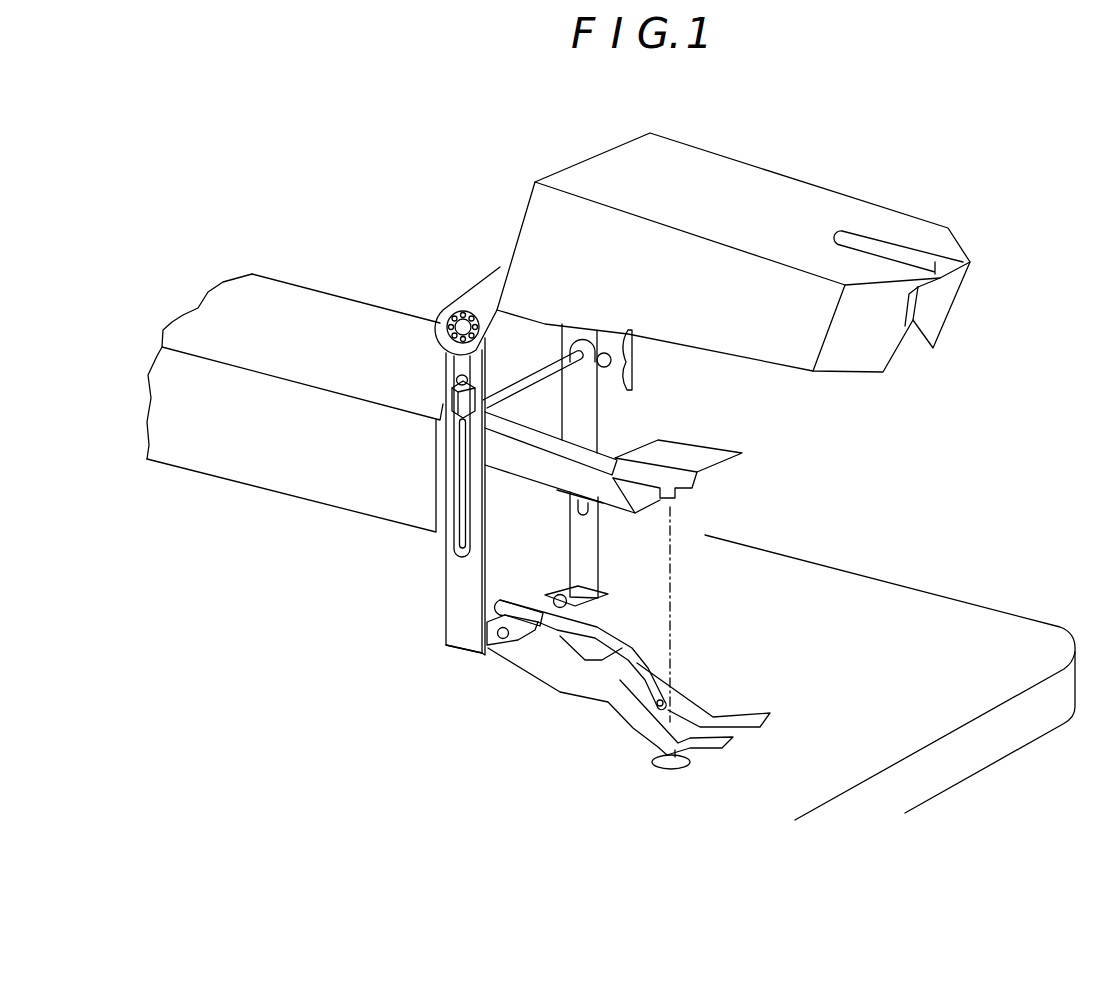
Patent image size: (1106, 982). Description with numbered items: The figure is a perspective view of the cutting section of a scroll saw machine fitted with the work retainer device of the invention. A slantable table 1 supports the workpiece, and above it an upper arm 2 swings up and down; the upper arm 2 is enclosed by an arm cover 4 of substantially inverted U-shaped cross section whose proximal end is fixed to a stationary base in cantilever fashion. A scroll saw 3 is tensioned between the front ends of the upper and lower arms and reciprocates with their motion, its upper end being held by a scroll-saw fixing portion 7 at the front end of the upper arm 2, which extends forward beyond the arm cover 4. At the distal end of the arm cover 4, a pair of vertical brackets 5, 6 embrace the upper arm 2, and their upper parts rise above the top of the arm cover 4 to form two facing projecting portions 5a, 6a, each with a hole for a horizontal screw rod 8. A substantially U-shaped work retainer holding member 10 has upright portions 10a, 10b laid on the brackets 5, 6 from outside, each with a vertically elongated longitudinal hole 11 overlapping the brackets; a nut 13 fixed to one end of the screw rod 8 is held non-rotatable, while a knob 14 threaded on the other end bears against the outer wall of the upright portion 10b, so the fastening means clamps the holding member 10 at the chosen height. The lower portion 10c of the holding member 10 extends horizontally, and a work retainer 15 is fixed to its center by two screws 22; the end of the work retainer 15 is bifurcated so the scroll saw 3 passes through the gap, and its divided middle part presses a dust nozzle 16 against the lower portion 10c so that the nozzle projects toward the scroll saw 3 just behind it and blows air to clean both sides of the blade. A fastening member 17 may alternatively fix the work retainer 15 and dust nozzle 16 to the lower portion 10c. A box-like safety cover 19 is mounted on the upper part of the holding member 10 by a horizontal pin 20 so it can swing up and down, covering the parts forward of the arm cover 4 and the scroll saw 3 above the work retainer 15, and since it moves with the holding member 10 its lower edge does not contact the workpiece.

The slantable table 1 is at (908, 588).
The upper arm 2 is at (577, 452).
The scroll saw 3 is at (680, 598).
The arm cover 4 is at (230, 467).
The bracket 5 is at (487, 502).
The projecting portion 5a is at (442, 418).
The bracket 6 is at (587, 408).
The projecting portion 6a is at (578, 347).
The scroll-saw fixing portion 7 is at (697, 493).
The screw rod 8 is at (538, 375).
The work retainer holding member 10 is at (446, 593).
The upright portion 10a is at (455, 627).
The upright portion 10b is at (592, 557).
The lower portion 10c is at (495, 657).
The longitudinal hole 11 is at (463, 473).
The nut 13 is at (443, 392).
The knob 14 is at (630, 367).
The work retainer 15 is at (612, 697).
The dust nozzle 16 is at (630, 668).
The fastening member 17 is at (532, 605).
The safety cover 19 is at (815, 200).
The horizontal pin 20 is at (463, 312).
The screw 22 is at (573, 598).